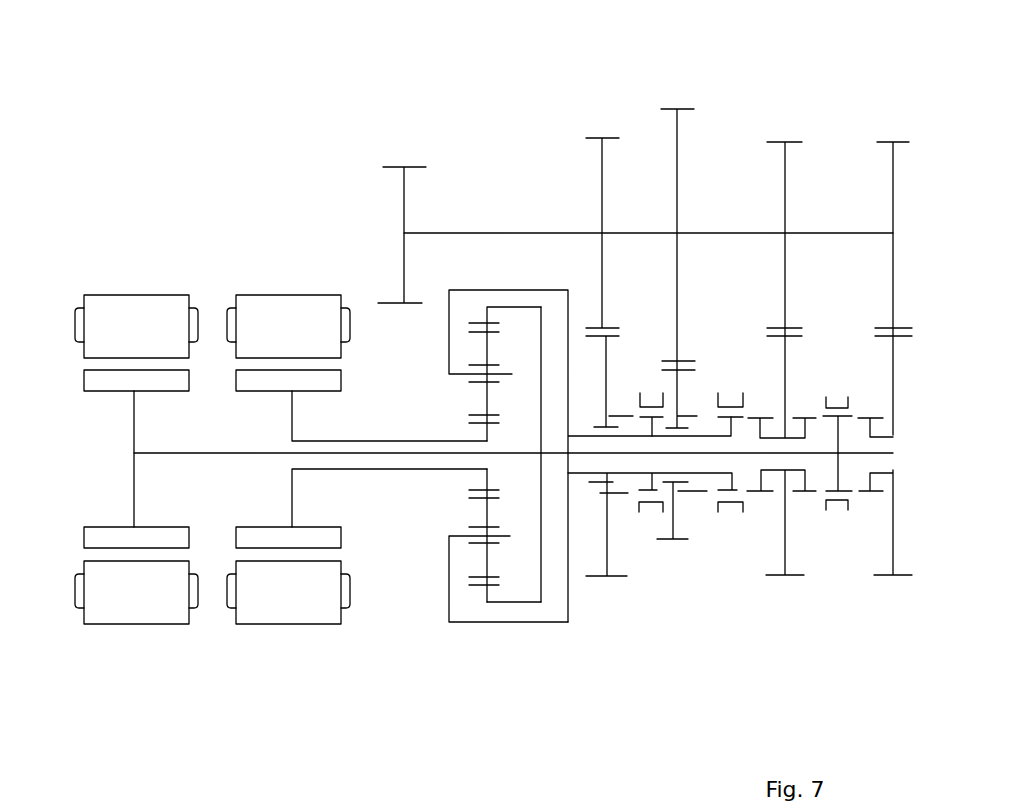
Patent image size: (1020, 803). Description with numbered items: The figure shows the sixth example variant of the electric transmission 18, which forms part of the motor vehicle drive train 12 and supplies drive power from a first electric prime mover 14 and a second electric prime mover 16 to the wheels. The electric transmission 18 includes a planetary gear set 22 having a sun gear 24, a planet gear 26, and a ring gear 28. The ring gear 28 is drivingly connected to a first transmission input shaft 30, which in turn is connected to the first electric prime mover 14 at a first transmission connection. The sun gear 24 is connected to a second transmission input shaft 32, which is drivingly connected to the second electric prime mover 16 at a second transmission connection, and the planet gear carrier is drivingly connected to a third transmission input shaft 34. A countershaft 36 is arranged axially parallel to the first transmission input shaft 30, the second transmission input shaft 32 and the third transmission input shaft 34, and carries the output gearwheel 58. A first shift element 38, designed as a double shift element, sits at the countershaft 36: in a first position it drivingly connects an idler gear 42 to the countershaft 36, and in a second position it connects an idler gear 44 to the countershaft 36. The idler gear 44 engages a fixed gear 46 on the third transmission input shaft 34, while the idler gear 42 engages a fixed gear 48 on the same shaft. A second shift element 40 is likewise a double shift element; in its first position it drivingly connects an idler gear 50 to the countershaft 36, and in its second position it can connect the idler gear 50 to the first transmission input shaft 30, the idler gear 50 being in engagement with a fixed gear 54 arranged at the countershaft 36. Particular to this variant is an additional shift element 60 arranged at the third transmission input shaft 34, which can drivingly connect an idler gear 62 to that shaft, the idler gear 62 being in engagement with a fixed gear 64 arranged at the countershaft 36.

The motor vehicle drive train 12 is at (158, 180).
The first electric prime mover 14 is at (157, 278).
The second electric prime mover 16 is at (280, 275).
The electric transmission 18 is at (307, 193).
The planetary gear set 22 is at (437, 642).
The sun gear 24 is at (487, 469).
The planet gear 26 is at (487, 357).
The ring gear 28 is at (485, 595).
The first transmission input shaft 30 is at (187, 453).
The second transmission input shaft 32 is at (367, 469).
The third transmission input shaft 34 is at (583, 474).
The countershaft 36 is at (797, 233).
The first shift element 38 is at (720, 505).
The second shift element 40 is at (832, 505).
The idler gear 42 is at (786, 500).
The idler gear 44 is at (675, 513).
The fixed gear 46 is at (675, 190).
The fixed gear 48 is at (782, 205).
The idler gear 50 is at (893, 505).
The fixed gear 54 is at (891, 188).
The output gearwheel 58 is at (404, 253).
The additional shift element 60 is at (607, 550).
The idler gear 62 is at (640, 506).
The fixed gear 64 is at (602, 203).